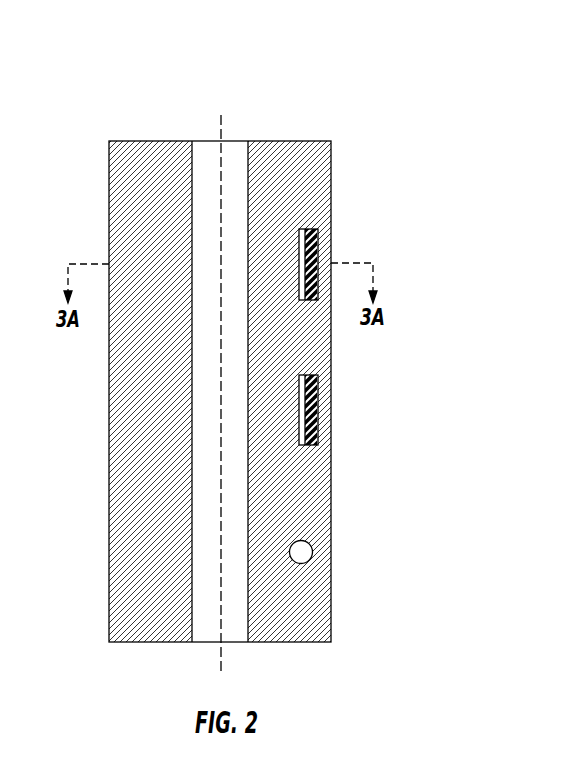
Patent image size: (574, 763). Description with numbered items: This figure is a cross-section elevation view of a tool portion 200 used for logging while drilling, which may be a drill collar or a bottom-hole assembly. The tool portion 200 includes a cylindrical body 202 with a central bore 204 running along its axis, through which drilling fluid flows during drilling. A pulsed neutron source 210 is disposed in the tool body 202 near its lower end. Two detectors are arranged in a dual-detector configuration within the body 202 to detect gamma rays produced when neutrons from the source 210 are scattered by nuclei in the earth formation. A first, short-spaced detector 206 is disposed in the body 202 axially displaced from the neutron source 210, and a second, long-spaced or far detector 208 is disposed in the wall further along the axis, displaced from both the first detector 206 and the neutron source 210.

The tool portion 200 is at (400, 46).
The cylindrical body 202 is at (331, 168).
The central bore 204 is at (247, 152).
The first (short-spaced) detector 206 is at (320, 388).
The second (long-spaced or far) detector 208 is at (320, 243).
The pulsed neutron source 210 is at (312, 546).